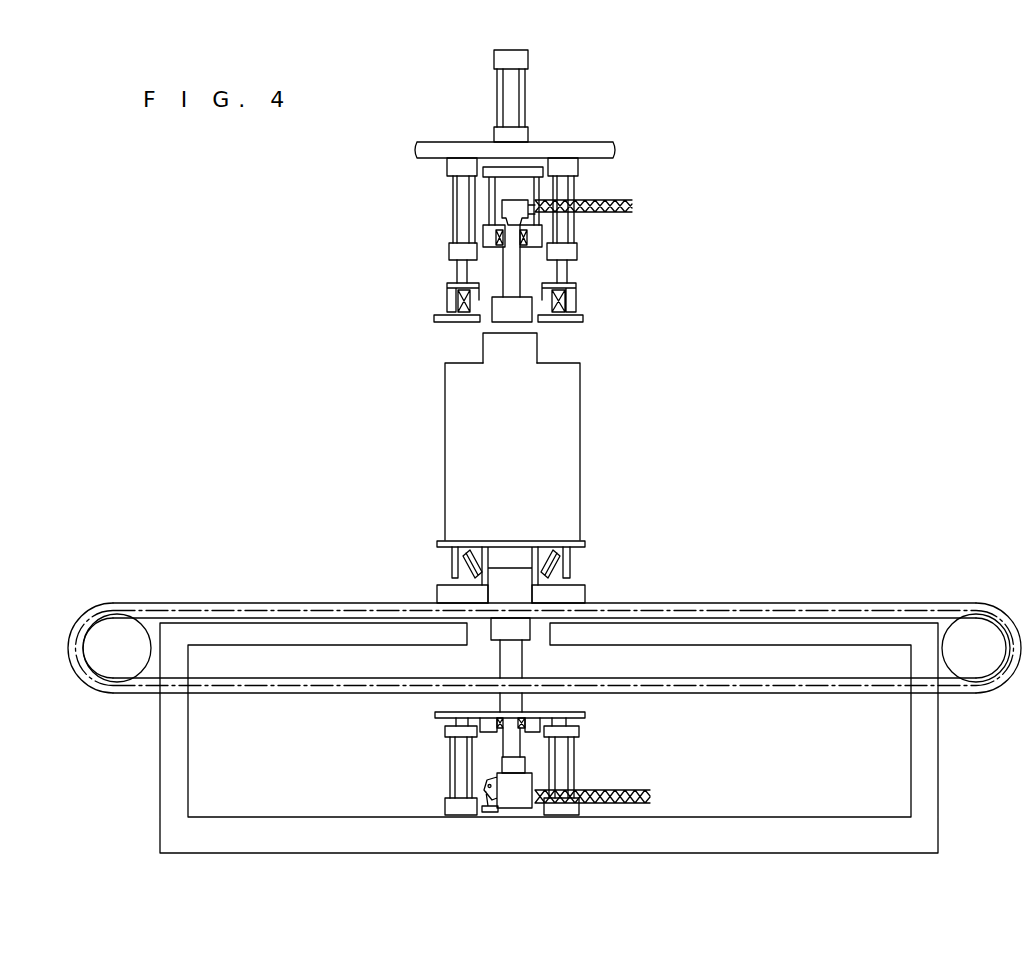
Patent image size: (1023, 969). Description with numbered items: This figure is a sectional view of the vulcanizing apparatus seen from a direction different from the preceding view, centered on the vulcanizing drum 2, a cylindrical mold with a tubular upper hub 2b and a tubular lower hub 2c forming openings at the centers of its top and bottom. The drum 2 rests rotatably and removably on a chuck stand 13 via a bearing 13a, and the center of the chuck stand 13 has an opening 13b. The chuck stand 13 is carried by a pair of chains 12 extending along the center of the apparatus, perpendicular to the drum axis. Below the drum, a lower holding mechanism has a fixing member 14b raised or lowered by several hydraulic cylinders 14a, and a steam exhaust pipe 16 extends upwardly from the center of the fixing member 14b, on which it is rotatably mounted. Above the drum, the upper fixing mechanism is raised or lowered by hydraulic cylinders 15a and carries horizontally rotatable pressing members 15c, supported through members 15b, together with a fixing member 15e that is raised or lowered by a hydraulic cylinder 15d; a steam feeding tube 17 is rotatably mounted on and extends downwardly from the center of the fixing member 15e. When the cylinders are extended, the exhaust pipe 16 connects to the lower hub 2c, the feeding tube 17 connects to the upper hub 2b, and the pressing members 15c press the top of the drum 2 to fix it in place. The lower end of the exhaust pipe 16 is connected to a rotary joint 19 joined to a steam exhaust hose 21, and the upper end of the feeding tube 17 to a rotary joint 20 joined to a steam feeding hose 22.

The vulcanizing drum 2 is at (565, 440).
The upper hub 2b is at (512, 340).
The lower hub 2c is at (515, 578).
The chains 12 is at (818, 605).
The chuck stand 13 is at (588, 602).
The bearing 13a is at (475, 575).
The opening 13b is at (500, 594).
The hydraulic cylinders 14a is at (565, 762).
The fixing member 14b is at (570, 707).
The hydraulic cylinders 15a is at (450, 233).
The upper clamp 15b is at (574, 301).
The pressing members 15c is at (580, 322).
The hydraulic cylinder 15d is at (530, 99).
The fixing member 15e is at (550, 245).
The steam exhaust pipe 16 is at (520, 662).
The steam feeding tube 17 is at (502, 280).
The rotary joint 19 is at (514, 812).
The rotary joint 20 is at (504, 207).
The steam exhaust hose 21 is at (629, 805).
The steam feeding hose 22 is at (620, 195).